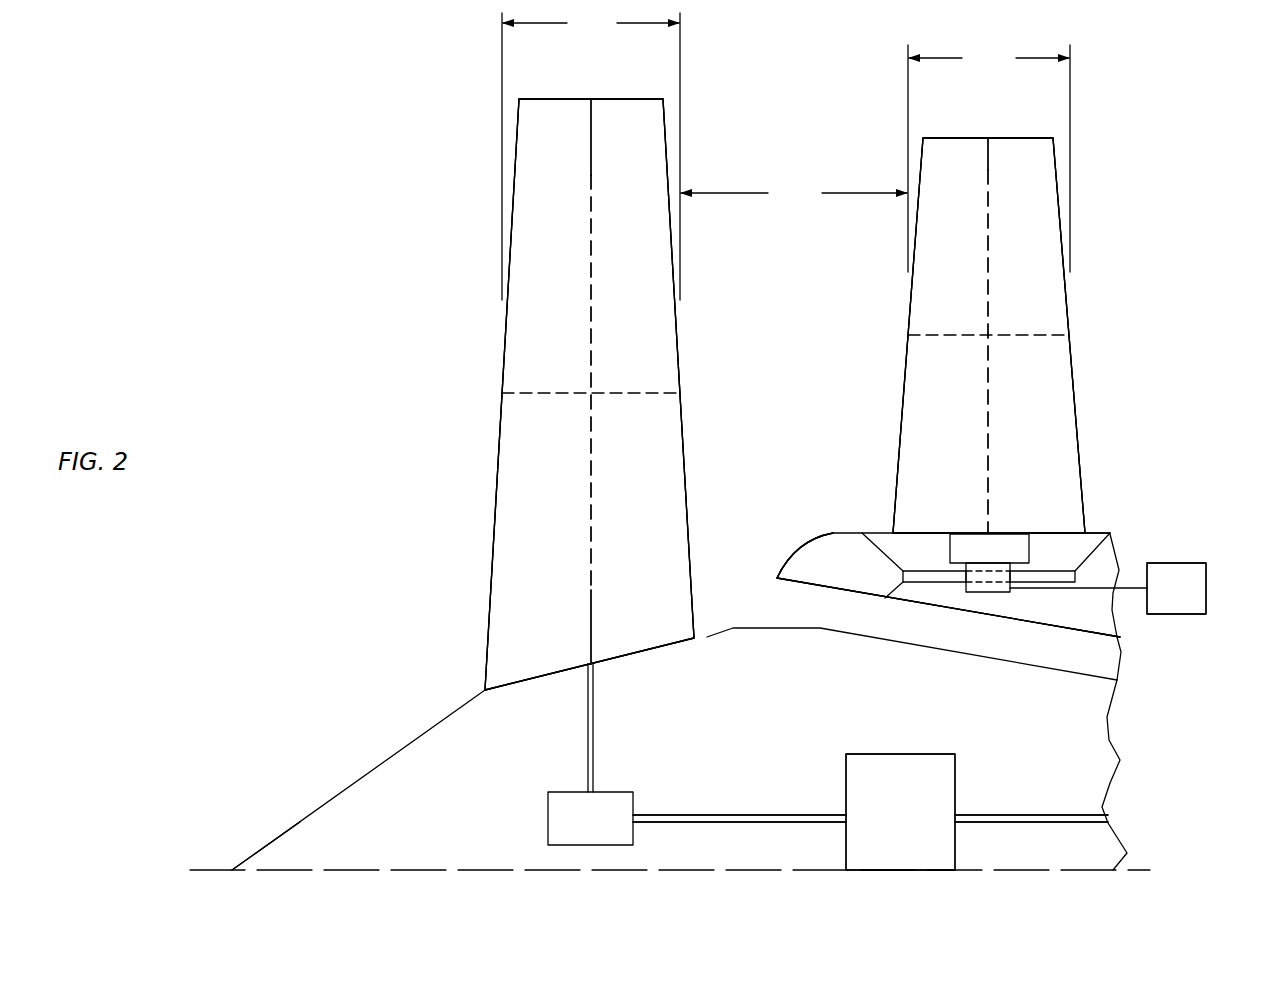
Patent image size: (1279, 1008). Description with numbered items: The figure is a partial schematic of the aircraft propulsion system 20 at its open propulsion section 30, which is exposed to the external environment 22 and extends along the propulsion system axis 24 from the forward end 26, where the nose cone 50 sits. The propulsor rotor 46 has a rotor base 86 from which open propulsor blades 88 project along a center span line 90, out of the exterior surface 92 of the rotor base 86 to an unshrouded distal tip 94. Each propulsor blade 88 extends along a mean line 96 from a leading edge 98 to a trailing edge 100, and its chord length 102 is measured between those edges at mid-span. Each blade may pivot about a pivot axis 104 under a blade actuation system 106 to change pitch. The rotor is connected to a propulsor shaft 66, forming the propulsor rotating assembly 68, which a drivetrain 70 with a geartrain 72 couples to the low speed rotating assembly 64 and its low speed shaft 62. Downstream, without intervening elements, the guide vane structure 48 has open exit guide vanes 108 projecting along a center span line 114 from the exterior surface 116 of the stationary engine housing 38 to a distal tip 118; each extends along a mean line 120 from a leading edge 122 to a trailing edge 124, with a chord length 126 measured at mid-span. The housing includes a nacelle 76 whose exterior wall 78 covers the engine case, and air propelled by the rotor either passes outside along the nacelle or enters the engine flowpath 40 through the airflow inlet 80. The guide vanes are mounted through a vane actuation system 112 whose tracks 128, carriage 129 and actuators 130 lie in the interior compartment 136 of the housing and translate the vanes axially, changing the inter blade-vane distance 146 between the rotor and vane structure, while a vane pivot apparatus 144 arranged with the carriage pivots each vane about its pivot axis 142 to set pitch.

The aircraft propulsion system 20 is at (228, 104).
The external environment 22 is at (316, 287).
The propulsion system axis 24 is at (200, 868).
The forward end 26 is at (232, 868).
The propulsion section 30 is at (851, 81).
The engine housing 38 is at (1126, 533).
The engine flowpath 40 is at (1078, 655).
The propulsor rotor 46 is at (476, 171).
The guide vane structure 48 is at (1078, 182).
The nose cone 50 is at (357, 775).
The low speed shaft 62 is at (1073, 823).
The low speed rotating assembly 64 is at (1030, 802).
The propulsor shaft 66 is at (765, 823).
The propulsor rotating assembly 68 is at (510, 820).
The drivetrain 70 is at (882, 748).
The geartrain 72 is at (916, 827).
The nacelle 76 is at (845, 533).
The exterior wall 78 is at (948, 545).
The airflow inlet 80 is at (773, 605).
The rotor base 86 is at (594, 727).
The propulsor blades 88 is at (563, 545).
The center span line 90 is at (593, 608).
The exterior surface 92 is at (520, 674).
The distal tip 94 is at (555, 99).
The mean line 96 is at (624, 392).
The leading edge 98 is at (498, 443).
The trailing edge 100 is at (684, 444).
The chord length 102 is at (591, 155).
The pivot axis 104 is at (636, 381).
The blade actuation system 106 is at (613, 834).
The exit guide vanes 108 is at (972, 445).
The vane actuation system 112 is at (1219, 549).
The center span line 114 is at (988, 387).
The exterior surface 116 is at (1053, 532).
The distal tip 118 is at (1017, 138).
The mean line 120 is at (1033, 335).
The leading edge 122 is at (905, 378).
The trailing edge 124 is at (1080, 388).
The chord length 126 is at (989, 158).
The tracks 128 is at (940, 583).
The carriage 129 is at (992, 593).
The actuators 130 is at (1199, 604).
The interior compartment 136 is at (1092, 619).
The pivot axis 142 is at (1041, 335).
The vane pivot apparatus 144 is at (975, 550).
The inter blade-vane distance 146 is at (794, 194).